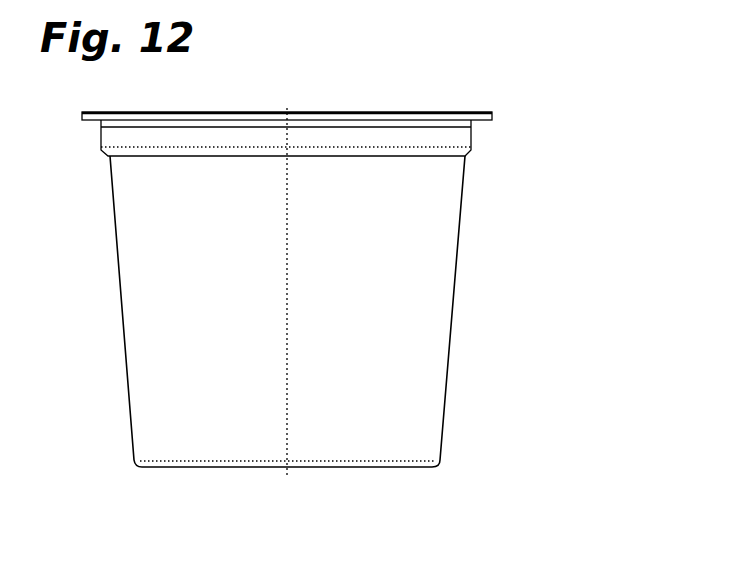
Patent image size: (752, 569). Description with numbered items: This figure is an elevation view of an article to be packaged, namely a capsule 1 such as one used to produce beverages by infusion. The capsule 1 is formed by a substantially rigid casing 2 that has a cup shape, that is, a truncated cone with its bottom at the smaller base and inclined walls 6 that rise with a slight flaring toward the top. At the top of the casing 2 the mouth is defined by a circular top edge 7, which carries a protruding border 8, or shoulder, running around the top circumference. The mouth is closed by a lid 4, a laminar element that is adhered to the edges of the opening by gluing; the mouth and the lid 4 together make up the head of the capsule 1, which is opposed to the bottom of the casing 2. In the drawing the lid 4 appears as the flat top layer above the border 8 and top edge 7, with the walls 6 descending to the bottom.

The capsule 1 is at (546, 230).
The casing 2 is at (348, 304).
The lid 4 is at (353, 112).
The inclined walls 6 is at (455, 247).
The circular top edge 7 is at (471, 148).
The protruding border 8 is at (474, 122).